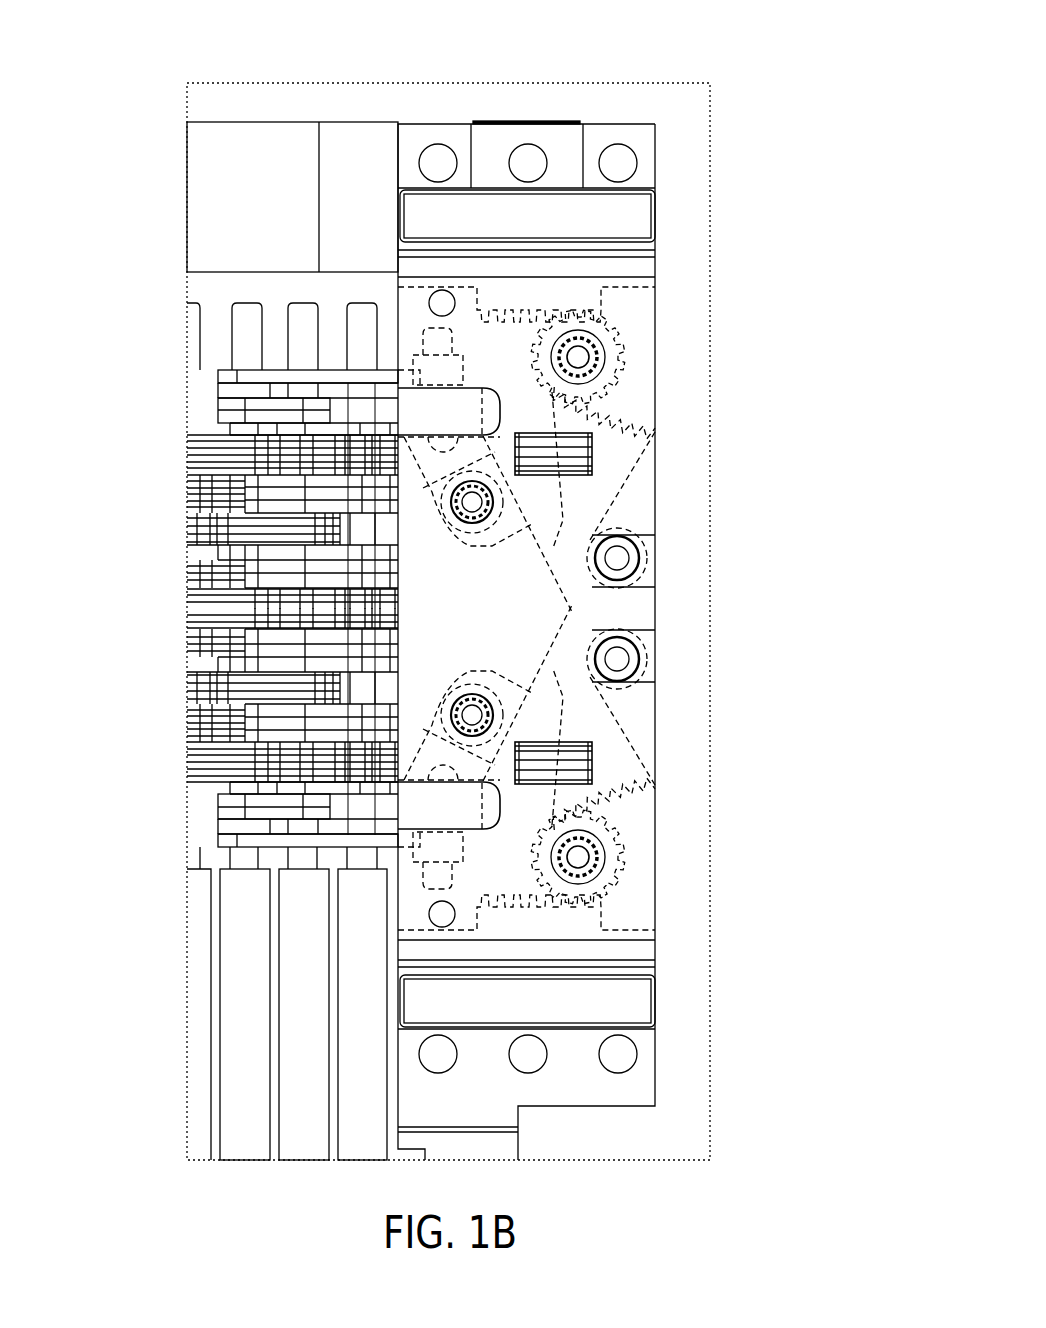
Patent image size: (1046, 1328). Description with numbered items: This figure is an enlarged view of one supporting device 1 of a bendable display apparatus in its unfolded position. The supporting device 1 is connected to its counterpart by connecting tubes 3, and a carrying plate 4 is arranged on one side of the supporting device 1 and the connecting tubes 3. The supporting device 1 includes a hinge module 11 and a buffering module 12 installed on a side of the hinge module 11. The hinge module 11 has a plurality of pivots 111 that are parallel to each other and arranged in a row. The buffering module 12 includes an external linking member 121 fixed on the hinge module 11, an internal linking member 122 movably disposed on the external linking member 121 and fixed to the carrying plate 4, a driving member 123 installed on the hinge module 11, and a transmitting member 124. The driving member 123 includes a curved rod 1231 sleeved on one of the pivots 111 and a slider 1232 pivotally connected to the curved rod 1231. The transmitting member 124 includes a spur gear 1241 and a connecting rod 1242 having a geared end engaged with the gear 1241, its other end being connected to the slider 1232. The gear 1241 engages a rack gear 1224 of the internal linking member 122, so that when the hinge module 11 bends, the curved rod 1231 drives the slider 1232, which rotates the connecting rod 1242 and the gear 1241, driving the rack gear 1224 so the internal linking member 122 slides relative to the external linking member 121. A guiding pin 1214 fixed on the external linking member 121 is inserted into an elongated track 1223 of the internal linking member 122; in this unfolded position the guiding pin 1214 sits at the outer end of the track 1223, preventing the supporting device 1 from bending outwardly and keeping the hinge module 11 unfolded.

The supporting device 1 is at (446, 46).
The connecting tube 3 is at (230, 956).
The carrying plate 4 is at (262, 125).
The hinge module 11 is at (358, 296).
The buffering module 12 is at (433, 127).
The pivot 111 is at (247, 311).
The external linking member 121 is at (638, 322).
The internal linking member 122 is at (638, 221).
The driving member 123 is at (100, 312).
The curved rod 1231 is at (228, 380).
The slider 1232 is at (433, 347).
The transmitting member 124 is at (785, 777).
The gear 1241 is at (625, 865).
The connecting rod 1242 is at (625, 777).
The guiding pin 1214 is at (617, 657).
The track 1223 is at (600, 632).
The rack gear 1224 is at (600, 918).